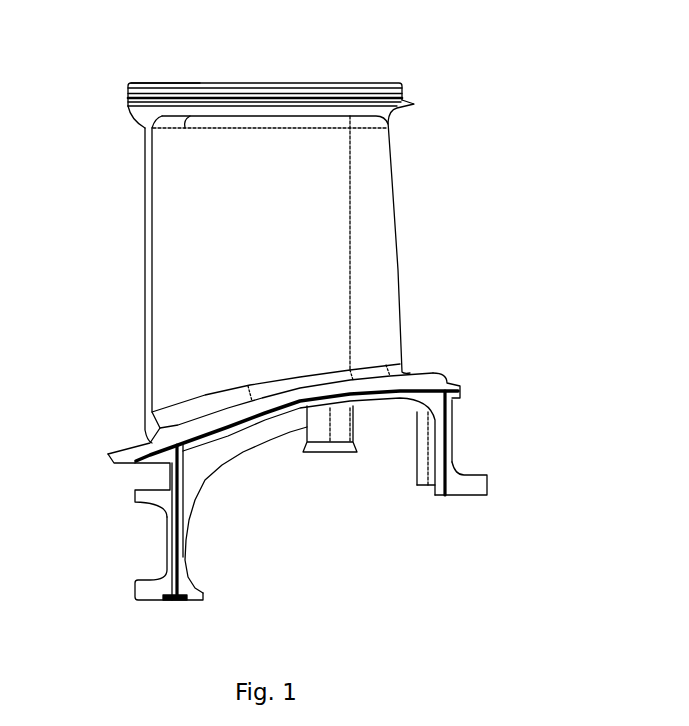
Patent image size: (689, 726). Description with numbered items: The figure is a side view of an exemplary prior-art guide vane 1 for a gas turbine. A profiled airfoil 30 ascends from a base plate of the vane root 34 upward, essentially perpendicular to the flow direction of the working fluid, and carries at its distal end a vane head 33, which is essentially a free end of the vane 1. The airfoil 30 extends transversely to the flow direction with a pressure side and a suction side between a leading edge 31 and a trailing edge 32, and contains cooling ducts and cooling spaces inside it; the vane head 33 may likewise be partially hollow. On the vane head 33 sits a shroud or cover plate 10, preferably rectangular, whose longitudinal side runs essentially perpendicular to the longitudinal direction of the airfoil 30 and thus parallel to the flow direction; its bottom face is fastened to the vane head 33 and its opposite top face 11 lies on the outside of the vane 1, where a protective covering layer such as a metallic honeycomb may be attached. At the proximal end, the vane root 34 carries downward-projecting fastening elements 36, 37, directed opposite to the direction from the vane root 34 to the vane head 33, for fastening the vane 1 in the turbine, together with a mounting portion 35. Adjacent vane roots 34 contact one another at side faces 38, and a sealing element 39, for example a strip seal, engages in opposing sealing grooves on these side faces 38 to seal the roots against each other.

The guide vane 1 is at (294, 300).
The cover plate 10 is at (334, 72).
The top face 11 is at (146, 41).
The vane head 33 is at (334, 119).
The airfoil 30 is at (347, 243).
The leading edge 31 is at (464, 247).
The trailing edge 32 is at (101, 285).
The vane root 34 is at (327, 441).
The sealing element 39 is at (489, 370).
The side face 38 is at (482, 443).
The fastening element 36 is at (491, 499).
The mounting portion 35 is at (106, 490).
The fastening element 37 is at (211, 522).